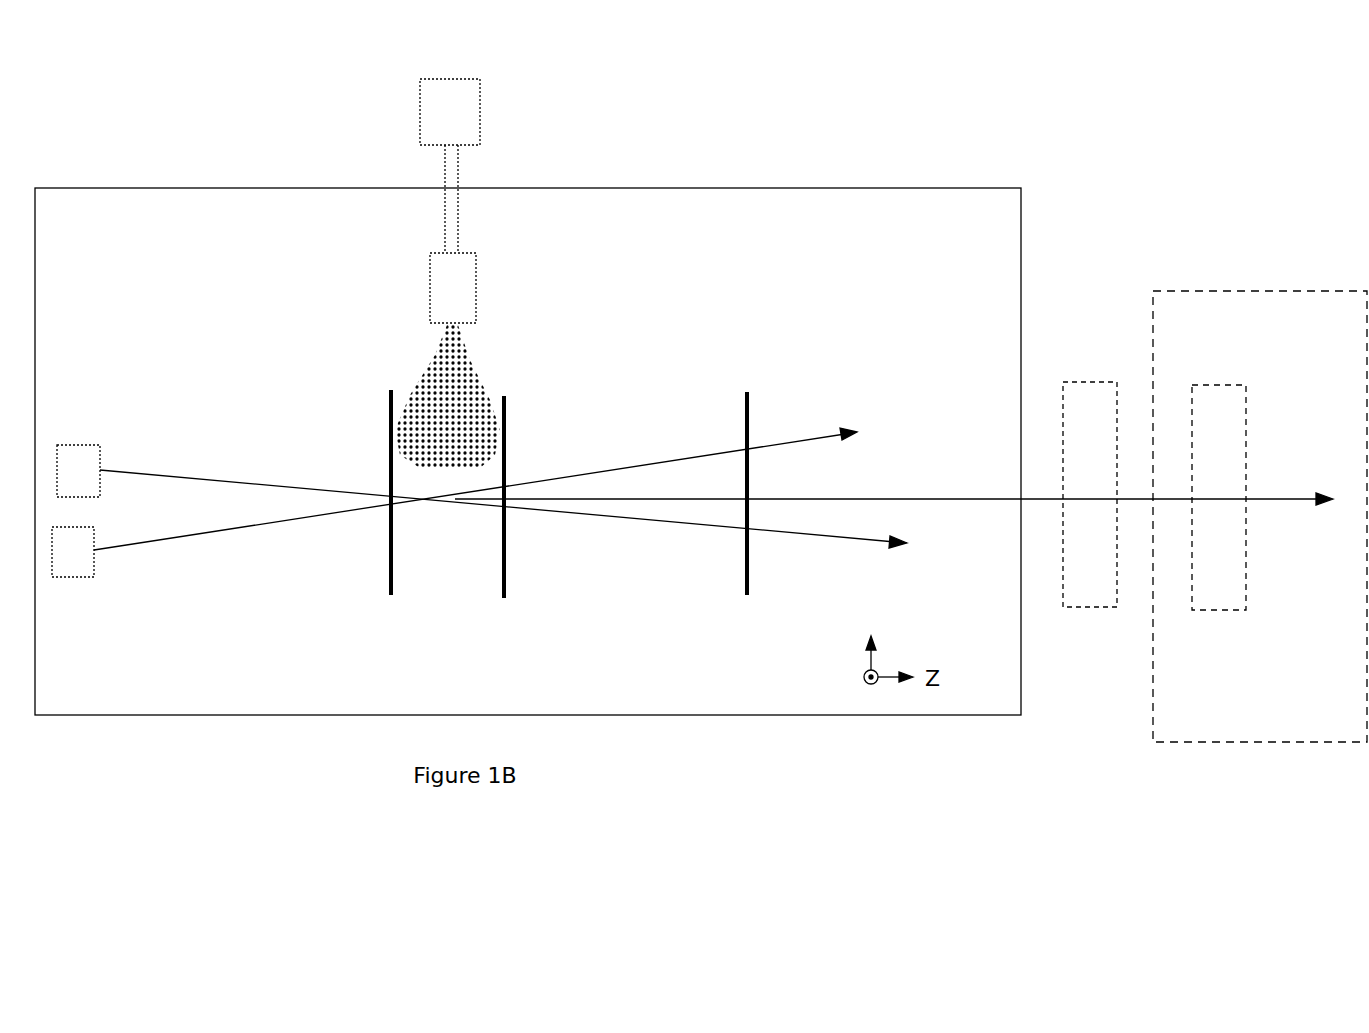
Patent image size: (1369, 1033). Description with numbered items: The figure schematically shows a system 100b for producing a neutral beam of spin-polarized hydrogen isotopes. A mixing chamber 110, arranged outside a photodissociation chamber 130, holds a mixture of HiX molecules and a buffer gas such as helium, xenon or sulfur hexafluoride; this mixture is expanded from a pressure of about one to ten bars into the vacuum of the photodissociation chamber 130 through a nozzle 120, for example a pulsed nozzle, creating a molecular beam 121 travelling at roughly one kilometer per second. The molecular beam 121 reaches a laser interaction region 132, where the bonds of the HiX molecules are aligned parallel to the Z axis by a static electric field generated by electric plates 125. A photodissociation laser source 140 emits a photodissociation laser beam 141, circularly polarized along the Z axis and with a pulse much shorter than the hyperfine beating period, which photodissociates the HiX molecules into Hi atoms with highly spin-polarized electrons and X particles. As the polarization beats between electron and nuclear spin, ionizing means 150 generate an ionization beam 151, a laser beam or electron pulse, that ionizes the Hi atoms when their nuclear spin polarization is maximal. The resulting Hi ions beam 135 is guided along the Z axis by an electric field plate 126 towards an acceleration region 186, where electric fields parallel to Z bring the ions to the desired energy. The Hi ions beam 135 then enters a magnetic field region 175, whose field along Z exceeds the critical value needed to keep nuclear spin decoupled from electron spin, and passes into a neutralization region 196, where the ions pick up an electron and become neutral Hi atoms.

The system 100b is at (1150, 140).
The mixing chamber 110 is at (463, 130).
The nozzle 120 is at (463, 295).
The molecular beam 121 is at (447, 365).
The electric plates 125 is at (390, 577).
The electric field plate 126 is at (748, 403).
The photodissociation chamber 130 is at (785, 188).
The laser interaction region 132 is at (448, 545).
The Hi ions beam 135 is at (980, 498).
The photodissociation laser source 140 is at (75, 455).
The photodissociation laser beam 141 is at (285, 480).
The ionizing means 150 is at (75, 565).
The ionization beam 151 is at (242, 530).
The magnetic field region 175 is at (1297, 742).
The acceleration region 186 is at (1078, 378).
The neutralization region 196 is at (1222, 385).